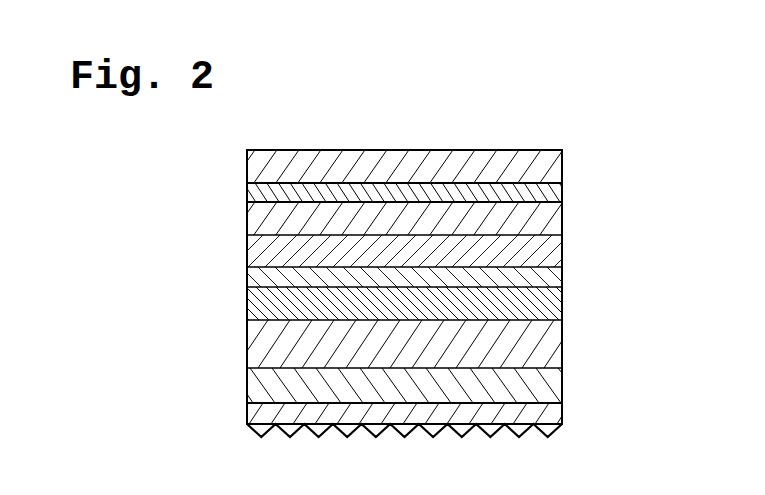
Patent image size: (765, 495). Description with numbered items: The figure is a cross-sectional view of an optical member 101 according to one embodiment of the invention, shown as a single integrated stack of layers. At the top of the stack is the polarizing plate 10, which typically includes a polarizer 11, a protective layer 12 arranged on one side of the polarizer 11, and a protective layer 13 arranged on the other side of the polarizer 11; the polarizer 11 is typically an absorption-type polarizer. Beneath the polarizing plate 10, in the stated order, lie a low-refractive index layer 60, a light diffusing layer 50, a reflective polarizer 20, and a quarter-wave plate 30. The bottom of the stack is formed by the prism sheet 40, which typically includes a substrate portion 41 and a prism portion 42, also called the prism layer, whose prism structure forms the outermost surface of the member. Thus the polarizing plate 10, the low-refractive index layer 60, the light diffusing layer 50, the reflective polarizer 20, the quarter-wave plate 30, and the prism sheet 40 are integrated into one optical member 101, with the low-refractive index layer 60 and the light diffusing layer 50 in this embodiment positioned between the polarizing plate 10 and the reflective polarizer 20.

The optical member 101 is at (590, 107).
The polarizing plate 10 is at (463, 192).
The protective layer 12 is at (562, 165).
The polarizer 11 is at (562, 192).
The protective layer 13 is at (445, 218).
The low-refractive index layer 60 is at (562, 248).
The light diffusing layer 50 is at (562, 274).
The reflective polarizer 20 is at (562, 302).
The λ/4 plate 30 is at (562, 346).
The prism sheet 40 is at (463, 402).
The substrate portion 41 is at (562, 383).
The prism portion 42 is at (445, 420).